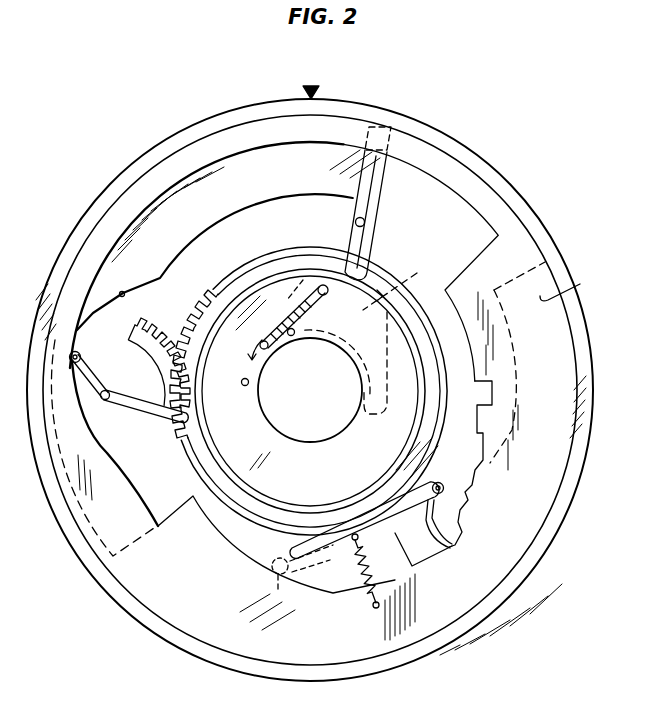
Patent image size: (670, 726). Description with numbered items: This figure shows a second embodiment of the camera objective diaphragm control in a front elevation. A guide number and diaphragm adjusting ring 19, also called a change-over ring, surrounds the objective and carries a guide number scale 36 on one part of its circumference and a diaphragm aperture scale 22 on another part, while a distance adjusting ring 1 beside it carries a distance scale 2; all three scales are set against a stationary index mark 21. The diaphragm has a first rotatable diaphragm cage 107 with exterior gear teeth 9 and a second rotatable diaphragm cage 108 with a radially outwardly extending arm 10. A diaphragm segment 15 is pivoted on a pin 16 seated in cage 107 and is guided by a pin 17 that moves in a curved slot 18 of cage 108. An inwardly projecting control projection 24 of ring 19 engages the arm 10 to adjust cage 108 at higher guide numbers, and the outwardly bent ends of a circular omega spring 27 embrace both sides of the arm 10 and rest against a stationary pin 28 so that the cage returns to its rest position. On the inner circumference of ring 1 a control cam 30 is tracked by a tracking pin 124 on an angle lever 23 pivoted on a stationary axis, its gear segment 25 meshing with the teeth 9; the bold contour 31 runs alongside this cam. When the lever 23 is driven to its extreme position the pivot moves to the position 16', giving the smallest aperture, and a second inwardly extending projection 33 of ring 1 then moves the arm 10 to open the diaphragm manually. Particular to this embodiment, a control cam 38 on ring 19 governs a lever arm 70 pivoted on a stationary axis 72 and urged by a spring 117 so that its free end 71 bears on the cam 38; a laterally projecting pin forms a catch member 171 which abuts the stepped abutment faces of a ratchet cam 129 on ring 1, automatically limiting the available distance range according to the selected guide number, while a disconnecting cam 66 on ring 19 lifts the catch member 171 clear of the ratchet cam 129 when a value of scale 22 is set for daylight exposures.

The distance adjusting ring 1 is at (96, 238).
The distance scale 2 is at (212, 140).
The guide number scale 36 is at (165, 156).
The stationary index mark 21 is at (304, 92).
The control projection 24 is at (345, 150).
The guide number and diaphragm adjusting ring 19 is at (446, 138).
The diaphragm aperture scale 22 is at (518, 200).
The second radially inwardly extending projection 33 is at (547, 281).
The radially outwardly extending arm 10 is at (378, 176).
The stationary pin 28 is at (366, 222).
The circular omega spring 27 is at (381, 288).
The diaphragm segment 15 is at (401, 340).
The pin 17 is at (318, 290).
The pin 16 is at (310, 323).
The curved slot 18 is at (301, 338).
The position of the axis of rotation 16' is at (241, 376).
The first rotatable diaphragm cage 107 is at (262, 284).
The second rotatable diaphragm cage 108 is at (226, 452).
The exterior gear teeth 9 is at (205, 326).
The gear segment 25 is at (173, 350).
The tracking pin 124 is at (82, 355).
The contour ring 31 is at (124, 292).
The angle lever 23 is at (140, 410).
The control cam 30 is at (106, 456).
The ratchet cam 129 is at (486, 402).
The control cam 38 is at (505, 446).
The pin (catch member) 171 is at (445, 482).
The free end 71 is at (439, 481).
The disconnecting cam 66 is at (428, 508).
The lever arm 70 is at (328, 542).
The spring 117 is at (374, 576).
The stationary axis 72 is at (278, 586).